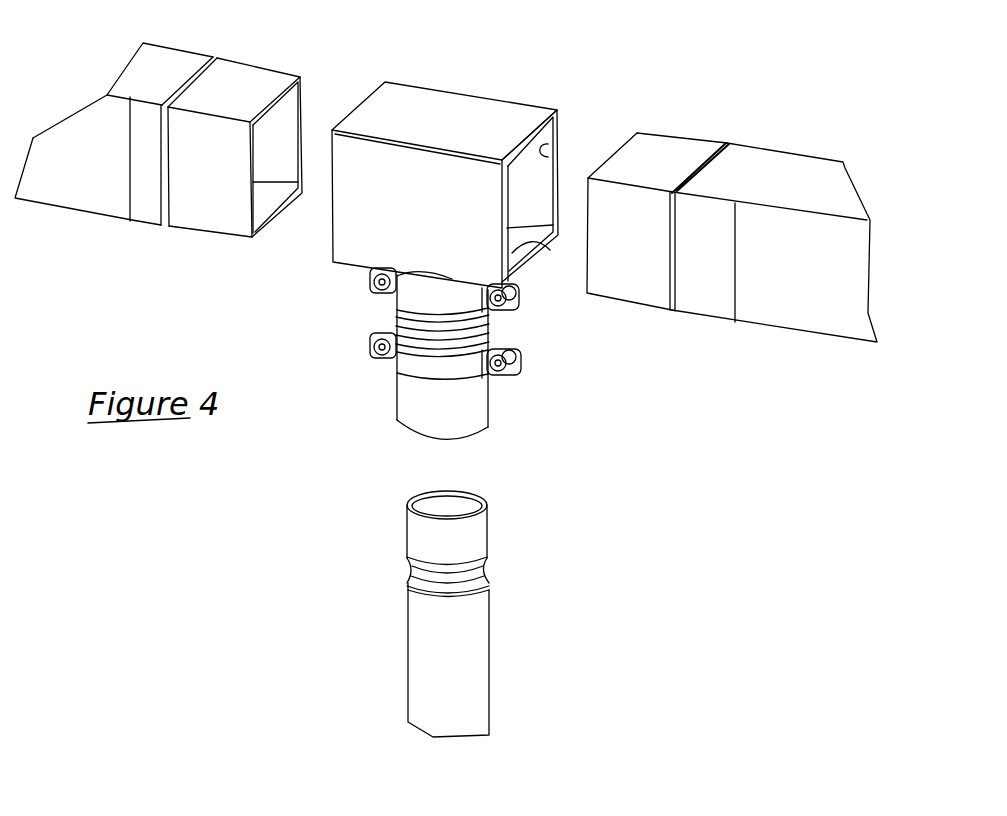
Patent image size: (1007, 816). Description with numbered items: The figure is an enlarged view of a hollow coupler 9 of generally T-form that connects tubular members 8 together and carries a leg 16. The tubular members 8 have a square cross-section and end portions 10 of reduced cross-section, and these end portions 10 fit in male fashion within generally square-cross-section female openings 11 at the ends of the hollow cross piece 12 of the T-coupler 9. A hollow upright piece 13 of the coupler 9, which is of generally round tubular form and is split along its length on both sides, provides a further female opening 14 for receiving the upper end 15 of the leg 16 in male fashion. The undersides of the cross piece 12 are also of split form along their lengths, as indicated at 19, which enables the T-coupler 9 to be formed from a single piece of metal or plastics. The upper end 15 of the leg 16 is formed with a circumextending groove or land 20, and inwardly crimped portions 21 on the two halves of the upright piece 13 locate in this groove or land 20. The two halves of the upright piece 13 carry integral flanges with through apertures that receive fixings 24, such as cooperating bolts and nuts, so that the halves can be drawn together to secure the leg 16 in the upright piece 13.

The tubular member 8 is at (153, 55).
The hollow coupler 9 is at (482, 107).
The end portion 10 is at (262, 82).
The female opening 11 is at (560, 150).
The hollow cross piece 12 is at (350, 218).
The hollow upright piece 13 is at (473, 397).
The female opening 14 is at (470, 437).
The upper end 15 is at (418, 533).
The leg 16 is at (475, 673).
The split 19 is at (532, 240).
The circumextending groove or land 20 is at (477, 570).
The inwardly crimped portions 21 is at (433, 337).
The fixings 24 is at (507, 312).